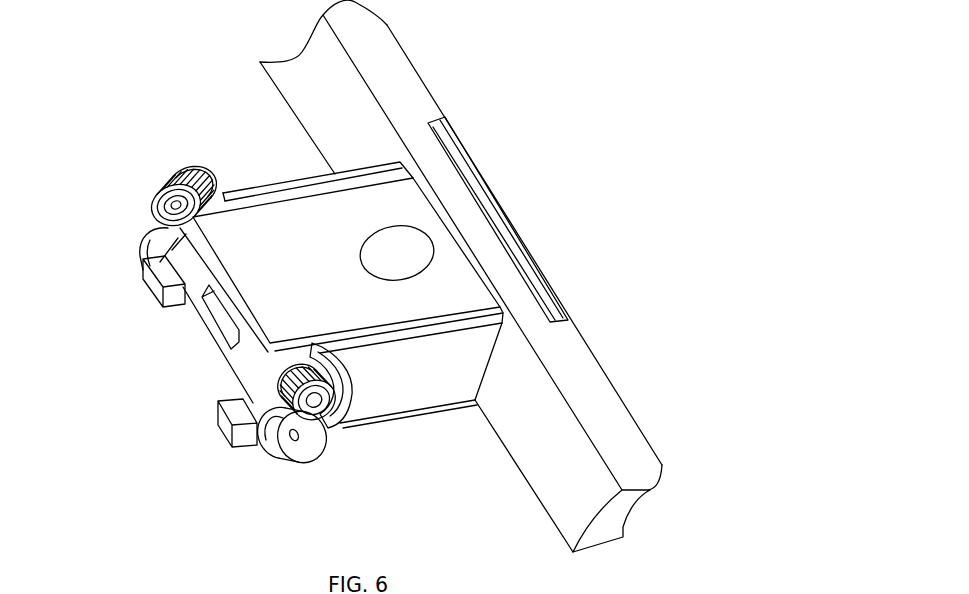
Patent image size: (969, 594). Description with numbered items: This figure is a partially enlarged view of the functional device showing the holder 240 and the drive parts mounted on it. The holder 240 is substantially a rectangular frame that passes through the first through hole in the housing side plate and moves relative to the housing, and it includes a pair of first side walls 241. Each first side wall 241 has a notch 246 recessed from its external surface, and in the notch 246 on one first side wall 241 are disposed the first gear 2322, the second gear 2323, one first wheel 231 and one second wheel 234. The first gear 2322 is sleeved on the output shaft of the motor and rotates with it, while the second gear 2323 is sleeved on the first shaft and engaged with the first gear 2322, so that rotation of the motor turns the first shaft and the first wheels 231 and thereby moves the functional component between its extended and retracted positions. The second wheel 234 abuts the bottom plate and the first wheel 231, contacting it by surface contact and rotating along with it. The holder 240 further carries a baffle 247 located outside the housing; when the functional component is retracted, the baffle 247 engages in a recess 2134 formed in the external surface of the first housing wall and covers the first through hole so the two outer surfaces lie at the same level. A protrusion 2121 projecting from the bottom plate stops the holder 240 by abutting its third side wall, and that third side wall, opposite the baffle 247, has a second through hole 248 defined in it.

The holder 240 is at (315, 170).
The first side wall 241 is at (337, 173).
The notch 246 is at (218, 200).
The baffle 247 is at (493, 208).
The second through hole 248 is at (180, 332).
The recess 2134 is at (530, 285).
The protrusion 2121 is at (223, 432).
The first gear 2322 is at (328, 419).
The second gear 2323 is at (197, 173).
The first wheel 231 is at (173, 177).
The second wheel 234 is at (153, 237).